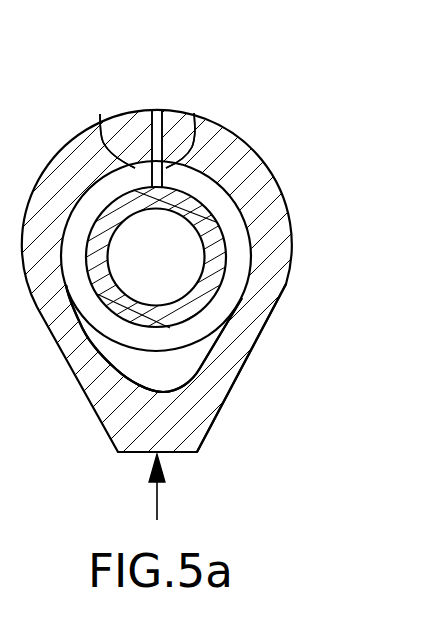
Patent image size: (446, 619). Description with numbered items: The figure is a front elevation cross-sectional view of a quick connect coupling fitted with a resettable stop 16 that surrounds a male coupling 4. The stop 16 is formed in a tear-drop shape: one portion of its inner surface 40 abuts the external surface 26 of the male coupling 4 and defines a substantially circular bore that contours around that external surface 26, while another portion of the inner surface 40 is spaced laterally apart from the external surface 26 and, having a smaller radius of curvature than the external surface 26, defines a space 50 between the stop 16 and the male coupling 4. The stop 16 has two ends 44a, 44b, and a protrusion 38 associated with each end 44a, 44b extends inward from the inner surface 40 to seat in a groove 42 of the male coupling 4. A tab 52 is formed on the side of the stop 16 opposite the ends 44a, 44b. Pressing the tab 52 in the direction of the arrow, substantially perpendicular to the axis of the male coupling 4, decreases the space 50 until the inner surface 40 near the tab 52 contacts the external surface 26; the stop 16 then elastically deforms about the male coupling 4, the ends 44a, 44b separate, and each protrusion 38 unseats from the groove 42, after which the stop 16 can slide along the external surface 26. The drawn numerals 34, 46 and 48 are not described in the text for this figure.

The resettable stop 16 is at (264, 154).
The slot 34 is at (153, 109).
The end of the stop 44a is at (162, 142).
The end of the stop 44b is at (150, 142).
The web portion 48 is at (141, 130).
The protrusion 38 is at (99, 116).
The male coupling 4 is at (208, 217).
The groove 42 is at (239, 251).
The inner surface of the stop 40 is at (231, 347).
The external surface of the male coupling 26 is at (202, 362).
The space 50 is at (137, 372).
The arm portion 46 is at (257, 388).
The tab 52 is at (198, 440).